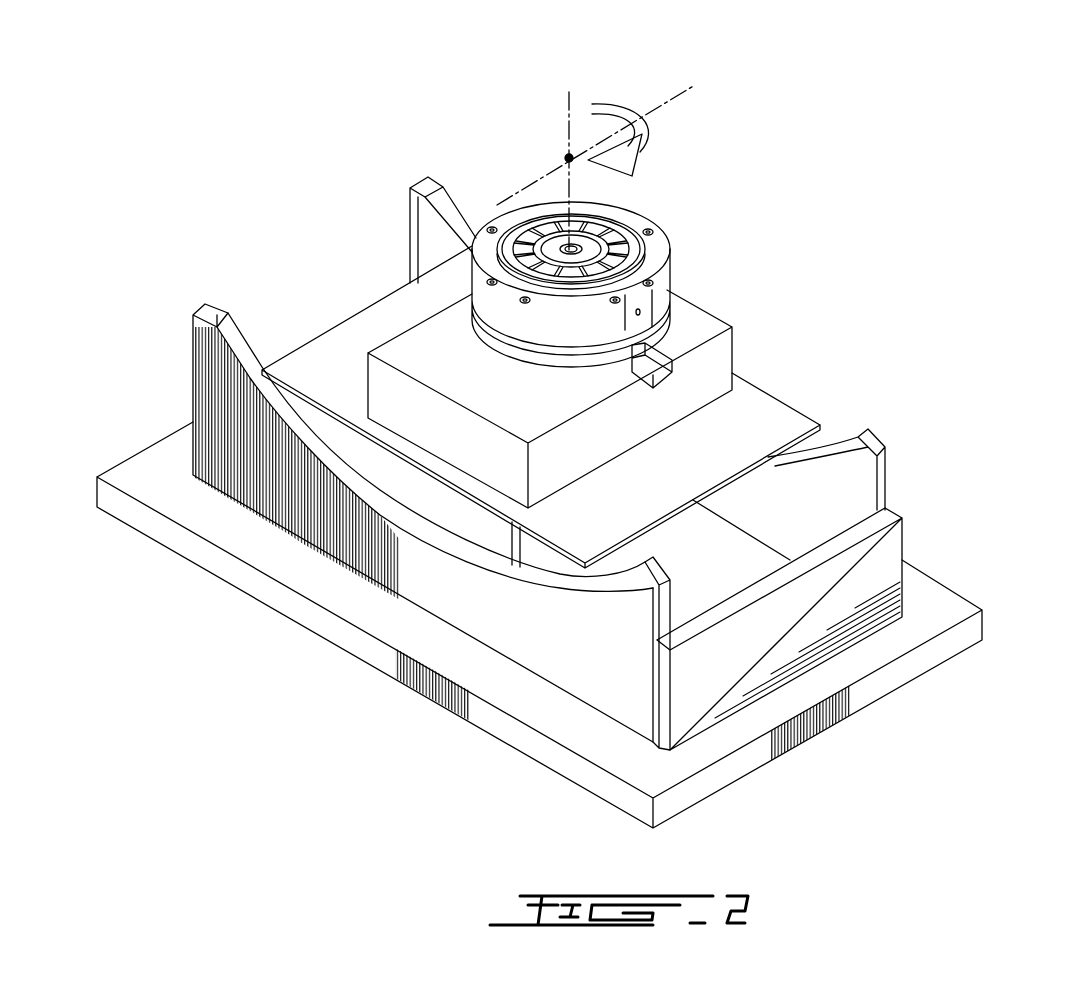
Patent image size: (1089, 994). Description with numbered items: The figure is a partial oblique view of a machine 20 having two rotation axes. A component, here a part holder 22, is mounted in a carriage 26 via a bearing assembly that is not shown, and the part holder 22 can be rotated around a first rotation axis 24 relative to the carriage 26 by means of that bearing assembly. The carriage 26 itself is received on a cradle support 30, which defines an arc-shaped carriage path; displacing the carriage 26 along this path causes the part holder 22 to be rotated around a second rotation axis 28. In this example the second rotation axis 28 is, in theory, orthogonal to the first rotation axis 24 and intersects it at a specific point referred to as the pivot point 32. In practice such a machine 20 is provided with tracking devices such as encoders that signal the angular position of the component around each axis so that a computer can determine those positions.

The machine 20 is at (860, 340).
The part holder 22 is at (612, 235).
The first rotation axis 24 is at (585, 190).
The carriage 26 is at (667, 347).
The second rotation axis 28 is at (661, 97).
The cradle support 30 is at (878, 552).
The pivot point 32 is at (556, 150).